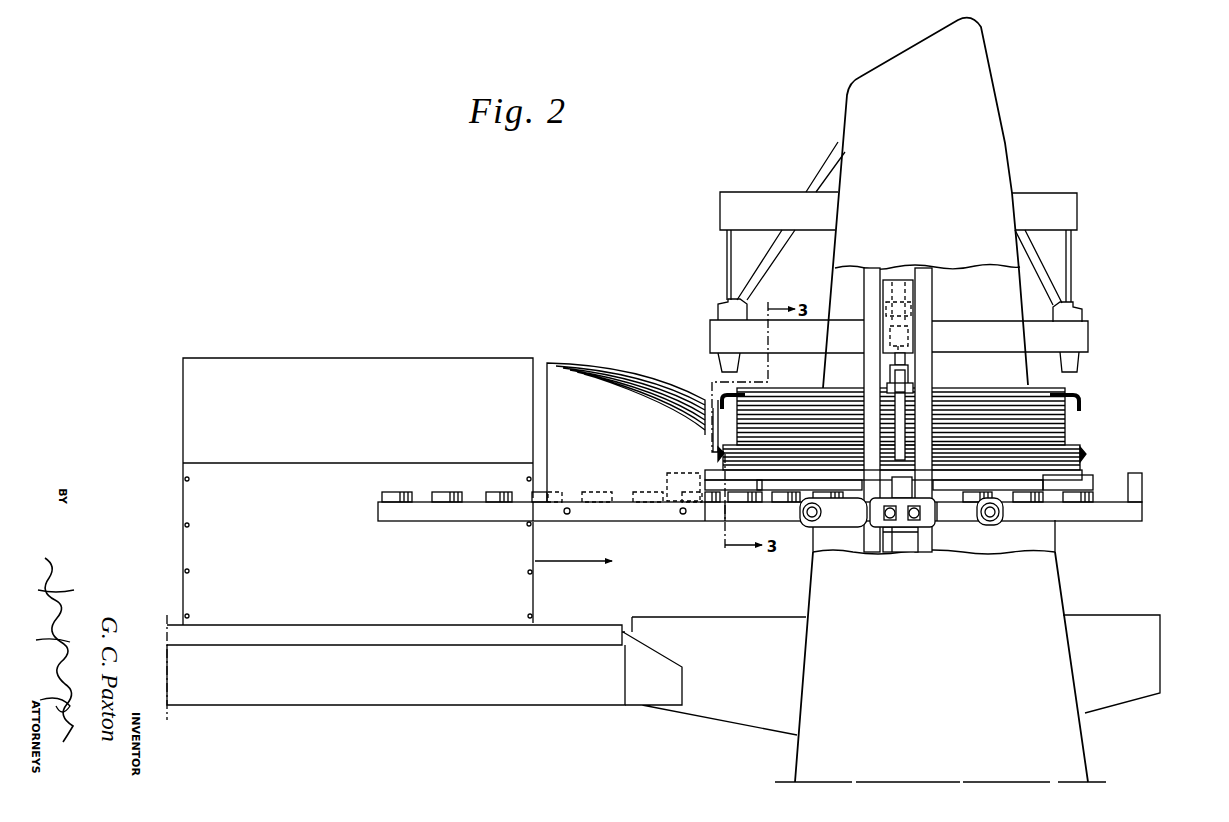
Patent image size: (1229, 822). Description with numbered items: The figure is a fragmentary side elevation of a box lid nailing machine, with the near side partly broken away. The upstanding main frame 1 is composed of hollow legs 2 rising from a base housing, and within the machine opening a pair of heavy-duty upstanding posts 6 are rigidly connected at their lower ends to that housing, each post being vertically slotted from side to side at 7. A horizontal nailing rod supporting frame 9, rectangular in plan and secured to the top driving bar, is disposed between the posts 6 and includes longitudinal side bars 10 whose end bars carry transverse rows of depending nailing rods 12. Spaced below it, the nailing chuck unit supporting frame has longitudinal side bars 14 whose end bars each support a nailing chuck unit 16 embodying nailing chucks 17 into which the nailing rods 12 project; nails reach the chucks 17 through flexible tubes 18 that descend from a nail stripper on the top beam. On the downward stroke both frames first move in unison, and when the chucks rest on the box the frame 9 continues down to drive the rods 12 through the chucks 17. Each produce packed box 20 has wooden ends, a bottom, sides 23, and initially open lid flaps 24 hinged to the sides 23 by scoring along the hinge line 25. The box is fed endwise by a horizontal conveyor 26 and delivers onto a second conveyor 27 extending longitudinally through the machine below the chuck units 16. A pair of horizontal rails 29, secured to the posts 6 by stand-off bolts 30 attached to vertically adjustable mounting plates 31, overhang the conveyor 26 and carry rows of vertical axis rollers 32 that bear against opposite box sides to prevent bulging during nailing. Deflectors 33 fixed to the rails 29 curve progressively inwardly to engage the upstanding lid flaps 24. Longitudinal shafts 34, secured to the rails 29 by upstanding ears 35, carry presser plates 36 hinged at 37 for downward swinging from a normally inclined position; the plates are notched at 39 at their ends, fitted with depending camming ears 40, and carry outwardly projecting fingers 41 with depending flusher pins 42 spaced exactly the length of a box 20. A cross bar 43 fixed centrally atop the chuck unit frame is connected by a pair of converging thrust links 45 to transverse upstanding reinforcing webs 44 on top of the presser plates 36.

The main frame 1 is at (1008, 147).
The hollow legs 2 is at (868, 136).
The upstanding posts 6 is at (921, 276).
The vertical slot 7 is at (888, 386).
The nailing rod supporting frame 9 is at (1046, 187).
The longitudinal side bars 10 is at (722, 207).
The nailing rods 12 is at (726, 262).
The longitudinal side bars 14 is at (720, 335).
The nailing chuck unit 16 is at (736, 297).
The nailing chucks 17 is at (717, 312).
The flexible tubes 18 is at (818, 180).
The produce packed box 20 is at (177, 502).
The sides 23 is at (287, 598).
The lid flaps 24 is at (187, 416).
The hinge line 25 is at (333, 463).
The conveyor 26 is at (348, 708).
The conveyor 27 is at (705, 720).
The horizontal rails 29 is at (447, 512).
The stand-off bolts 30 is at (816, 512).
The mounting plates 31 is at (858, 505).
The vertical axis rollers 32 is at (462, 490).
The deflectors 33 is at (583, 398).
The longitudinal shafts 34 is at (955, 490).
The upstanding ears 35 is at (900, 525).
The presser plates 36 is at (955, 405).
The pivot 37 is at (740, 485).
The notches 39 is at (716, 471).
The camming ears 40 is at (715, 477).
The fingers 41 is at (716, 388).
The flusher pins 42 is at (720, 406).
The cross bar 43 is at (912, 292).
The reinforcing webs 44 is at (913, 392).
The thrust links 45 is at (905, 353).